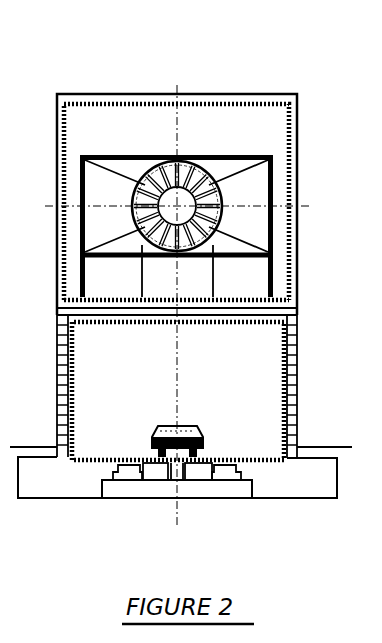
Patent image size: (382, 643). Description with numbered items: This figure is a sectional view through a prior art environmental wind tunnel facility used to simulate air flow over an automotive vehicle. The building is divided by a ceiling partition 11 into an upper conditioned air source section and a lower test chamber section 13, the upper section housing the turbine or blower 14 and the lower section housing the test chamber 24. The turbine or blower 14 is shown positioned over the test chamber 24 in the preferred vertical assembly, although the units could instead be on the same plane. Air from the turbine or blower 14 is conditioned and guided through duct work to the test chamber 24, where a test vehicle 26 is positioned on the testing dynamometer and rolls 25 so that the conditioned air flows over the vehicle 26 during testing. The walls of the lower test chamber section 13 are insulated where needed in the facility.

The ceiling partition 11 is at (150, 310).
The lower test chamber section 13 is at (302, 386).
The turbine or blower 14 is at (209, 159).
The test chamber 24 is at (155, 400).
The testing dynamometer and rolls 25 is at (206, 491).
The test vehicle 26 is at (191, 416).